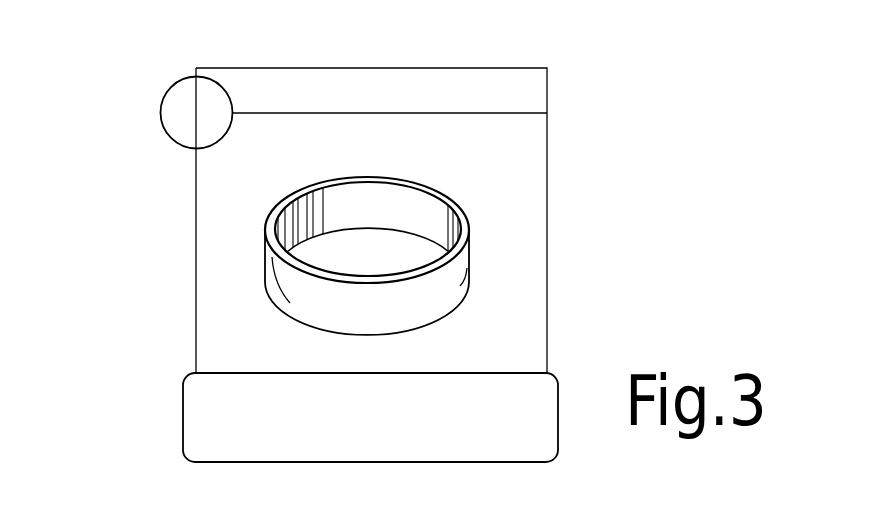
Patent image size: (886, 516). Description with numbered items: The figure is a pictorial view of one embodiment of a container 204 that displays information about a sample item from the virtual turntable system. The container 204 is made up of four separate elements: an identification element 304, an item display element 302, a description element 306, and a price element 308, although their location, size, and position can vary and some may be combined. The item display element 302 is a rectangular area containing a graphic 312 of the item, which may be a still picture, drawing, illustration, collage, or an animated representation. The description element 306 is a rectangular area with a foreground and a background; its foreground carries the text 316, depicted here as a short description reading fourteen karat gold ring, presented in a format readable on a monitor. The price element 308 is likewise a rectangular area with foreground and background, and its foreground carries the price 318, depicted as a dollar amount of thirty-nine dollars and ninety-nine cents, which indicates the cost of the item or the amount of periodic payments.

The container 204 is at (604, 115).
The item display element 302 is at (196, 230).
The identification element 304 is at (160, 110).
The description element 306 is at (183, 415).
The price element 308 is at (488, 68).
The graphic 312 is at (440, 288).
The text 316 is at (398, 425).
The price 318 is at (332, 90).